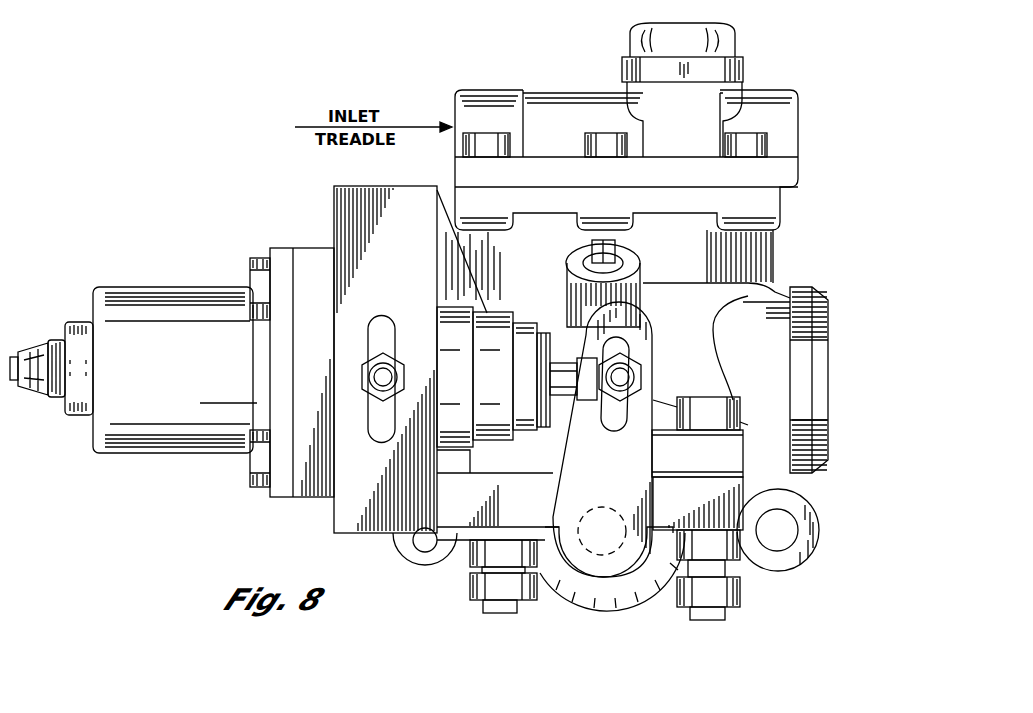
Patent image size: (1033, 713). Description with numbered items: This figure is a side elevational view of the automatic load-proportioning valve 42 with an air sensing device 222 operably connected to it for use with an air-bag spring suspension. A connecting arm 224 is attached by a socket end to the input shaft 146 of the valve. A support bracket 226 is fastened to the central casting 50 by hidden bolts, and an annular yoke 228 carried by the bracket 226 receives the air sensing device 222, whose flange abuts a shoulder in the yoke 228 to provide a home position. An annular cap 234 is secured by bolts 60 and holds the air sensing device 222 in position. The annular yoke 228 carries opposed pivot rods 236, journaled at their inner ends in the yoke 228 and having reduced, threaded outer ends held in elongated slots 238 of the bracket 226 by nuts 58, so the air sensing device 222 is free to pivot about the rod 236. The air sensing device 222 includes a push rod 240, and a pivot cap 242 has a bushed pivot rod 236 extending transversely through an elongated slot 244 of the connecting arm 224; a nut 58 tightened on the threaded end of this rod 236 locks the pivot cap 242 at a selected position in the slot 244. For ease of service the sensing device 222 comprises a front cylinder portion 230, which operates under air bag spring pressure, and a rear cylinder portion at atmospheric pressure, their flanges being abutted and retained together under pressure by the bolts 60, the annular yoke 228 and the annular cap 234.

The automatic load-proportioning valve 42 is at (446, 80).
The central casting 50 is at (540, 259).
The nut 58 is at (400, 360).
The bolts 60 is at (252, 262).
The input shaft 146 is at (584, 512).
The air sensing device 222 is at (180, 276).
The connecting arm 224 is at (652, 446).
The support bracket 226 is at (333, 500).
The annular yoke 228 is at (327, 309).
The front cylinder portion 230 is at (190, 361).
The annular cap 234 is at (277, 365).
The pivot rod 236 is at (378, 379).
The elongated slot 238 is at (376, 332).
The push rod 240 is at (565, 396).
The pivot cap 242 is at (580, 360).
The elongated slot 244 is at (600, 428).